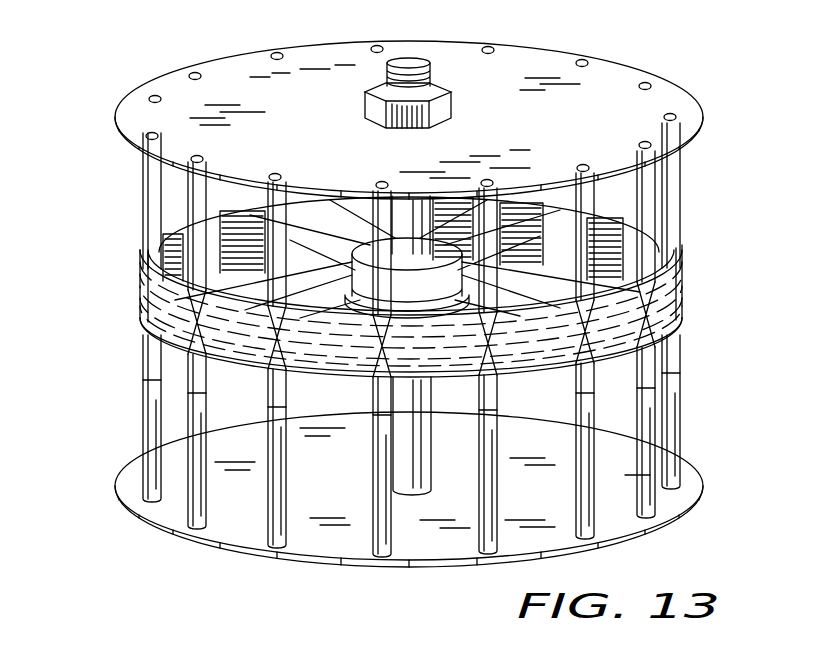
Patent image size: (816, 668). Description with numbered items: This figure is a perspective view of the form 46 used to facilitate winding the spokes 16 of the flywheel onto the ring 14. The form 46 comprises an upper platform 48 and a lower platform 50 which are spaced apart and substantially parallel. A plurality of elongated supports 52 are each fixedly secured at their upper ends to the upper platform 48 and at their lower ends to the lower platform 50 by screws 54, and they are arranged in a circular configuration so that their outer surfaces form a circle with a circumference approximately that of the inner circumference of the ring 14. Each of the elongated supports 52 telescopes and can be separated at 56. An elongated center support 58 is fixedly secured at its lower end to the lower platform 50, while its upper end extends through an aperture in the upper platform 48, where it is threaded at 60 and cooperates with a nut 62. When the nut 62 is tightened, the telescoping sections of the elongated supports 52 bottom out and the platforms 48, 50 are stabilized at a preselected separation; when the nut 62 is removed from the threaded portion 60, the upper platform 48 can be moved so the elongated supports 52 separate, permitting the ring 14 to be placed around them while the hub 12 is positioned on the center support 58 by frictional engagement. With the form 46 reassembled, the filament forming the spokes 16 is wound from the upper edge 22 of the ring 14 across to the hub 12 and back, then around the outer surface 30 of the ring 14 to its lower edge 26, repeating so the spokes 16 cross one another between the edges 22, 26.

The hub 12 is at (347, 233).
The ring 14 is at (700, 277).
The spokes 16 is at (262, 286).
The upper edge of the ring 22 is at (604, 293).
The lower edge of the ring 26 is at (625, 352).
The outer surface of the ring 30 is at (372, 338).
The form 46 is at (118, 203).
The upper platform 48 is at (510, 55).
The lower platform 50 is at (210, 546).
The elongated supports 52 is at (142, 354).
The screws 54 is at (277, 53).
The separation point of the elongated supports 56 is at (143, 389).
The center support 58 is at (428, 456).
The threaded portion 60 is at (432, 78).
The nut 62 is at (452, 108).